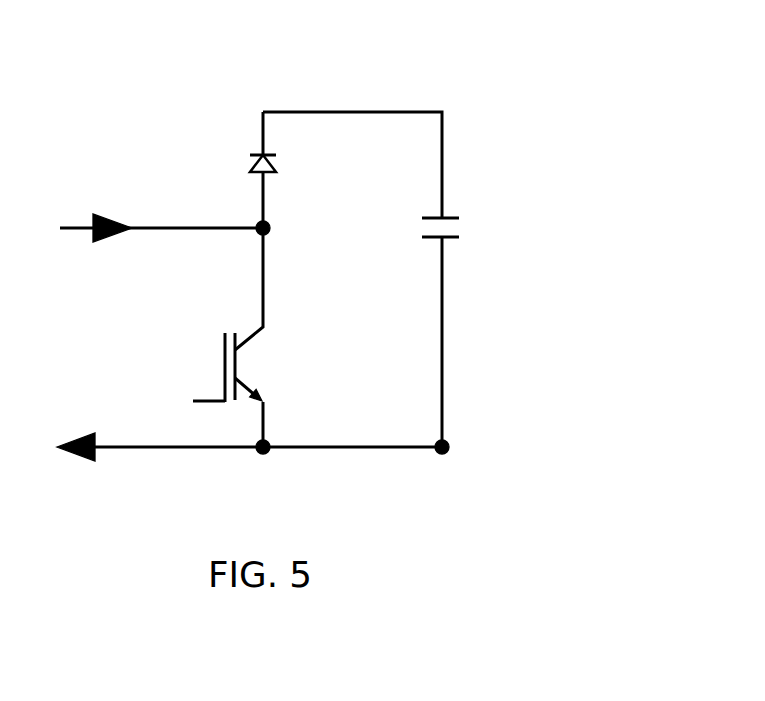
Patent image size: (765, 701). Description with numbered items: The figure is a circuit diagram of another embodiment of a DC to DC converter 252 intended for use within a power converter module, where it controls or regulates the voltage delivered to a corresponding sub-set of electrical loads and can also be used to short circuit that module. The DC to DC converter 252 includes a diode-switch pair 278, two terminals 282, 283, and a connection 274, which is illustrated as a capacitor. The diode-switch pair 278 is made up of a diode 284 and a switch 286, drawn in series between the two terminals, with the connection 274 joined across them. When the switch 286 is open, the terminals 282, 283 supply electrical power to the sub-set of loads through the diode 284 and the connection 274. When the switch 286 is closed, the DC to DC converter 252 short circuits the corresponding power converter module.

The DC to DC converter 252 is at (489, 90).
The connection 274 is at (450, 215).
The diode-switch pair 278 is at (223, 140).
The terminal 282 is at (268, 222).
The terminal 283 is at (258, 452).
The diode 284 is at (252, 180).
The switch 286 is at (198, 350).